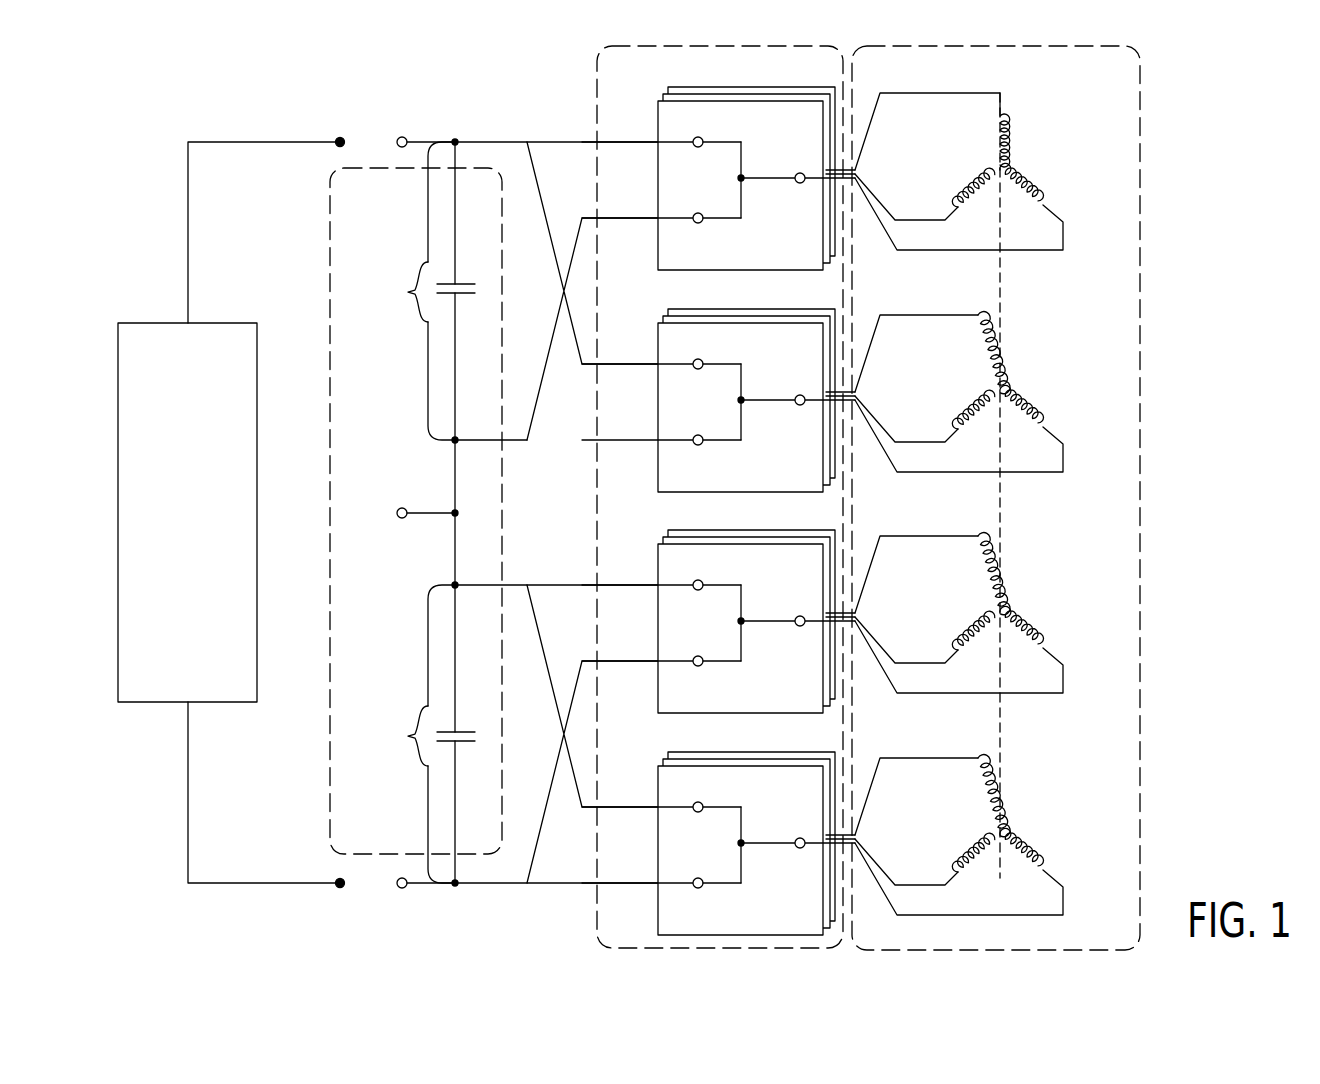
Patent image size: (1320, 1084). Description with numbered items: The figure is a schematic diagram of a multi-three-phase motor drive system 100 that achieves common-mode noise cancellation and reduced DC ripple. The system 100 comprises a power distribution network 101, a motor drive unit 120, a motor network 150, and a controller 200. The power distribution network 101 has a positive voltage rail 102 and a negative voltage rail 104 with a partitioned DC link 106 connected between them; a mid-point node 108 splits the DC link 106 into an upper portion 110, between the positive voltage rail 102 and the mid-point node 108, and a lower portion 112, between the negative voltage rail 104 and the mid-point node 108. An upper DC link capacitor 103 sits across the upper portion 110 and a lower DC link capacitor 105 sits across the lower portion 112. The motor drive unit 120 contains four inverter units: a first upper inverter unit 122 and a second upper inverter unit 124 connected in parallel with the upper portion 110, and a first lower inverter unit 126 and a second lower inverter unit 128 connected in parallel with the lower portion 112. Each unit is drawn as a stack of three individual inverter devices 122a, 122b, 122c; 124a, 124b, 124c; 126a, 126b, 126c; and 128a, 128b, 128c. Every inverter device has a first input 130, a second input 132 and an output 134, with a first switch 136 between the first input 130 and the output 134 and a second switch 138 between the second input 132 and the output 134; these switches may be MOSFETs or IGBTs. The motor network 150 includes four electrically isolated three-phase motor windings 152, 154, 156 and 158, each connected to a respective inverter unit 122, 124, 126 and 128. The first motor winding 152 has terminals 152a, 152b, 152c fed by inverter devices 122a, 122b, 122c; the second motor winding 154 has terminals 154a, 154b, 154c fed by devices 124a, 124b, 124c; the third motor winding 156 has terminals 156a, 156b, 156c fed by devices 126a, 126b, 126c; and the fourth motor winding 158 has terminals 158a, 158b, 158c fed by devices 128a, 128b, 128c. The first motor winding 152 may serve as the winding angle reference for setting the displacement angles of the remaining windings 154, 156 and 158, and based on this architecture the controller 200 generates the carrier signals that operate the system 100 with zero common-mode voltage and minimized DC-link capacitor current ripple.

The multi-three-phase motor drive system 100 is at (256, 127).
The power distribution network 101 is at (489, 134).
The positive voltage rail 102 is at (420, 140).
The upper DC link capacitor 103 is at (459, 282).
The negative voltage rail 104 is at (425, 888).
The lower DC link capacitor 105 is at (459, 730).
The partitioned direct current (DC) link 106 is at (425, 510).
The mid-point node 108 is at (318, 210).
The upper portion of the partitioned DC link 110 is at (378, 272).
The lower portion of the partitioned DC link 112 is at (378, 712).
The motor drive unit 120 is at (590, 88).
The first upper inverter unit 122 is at (652, 90).
The first inverter device of first upper inverter unit 122a is at (760, 100).
The second inverter device of first upper inverter unit 122b is at (705, 88).
The third inverter device of first upper inverter unit 122c is at (765, 93).
The second upper inverter unit 124 is at (650, 480).
The first inverter device of second upper inverter unit 124a is at (760, 322).
The second inverter device of second upper inverter unit 124b is at (705, 310).
The third inverter device of second upper inverter unit 124c is at (765, 315).
The first lower inverter unit 126 is at (650, 562).
The first inverter device of first lower inverter unit 126a is at (760, 543).
The second inverter device of first lower inverter unit 126b is at (705, 531).
The third inverter device of first lower inverter unit 126c is at (765, 536).
The second lower inverter unit 128 is at (650, 920).
The first inverter device of second lower inverter unit 128a is at (760, 765).
The second inverter device of second lower inverter unit 128b is at (705, 753).
The third inverter device of second lower inverter unit 128c is at (765, 758).
The first input 130 is at (730, 146).
The second input 132 is at (730, 214).
The output 134 is at (783, 184).
The first switch 136 is at (748, 167).
The second switch 138 is at (748, 191).
The motor network 150 is at (1150, 86).
The first motor winding 152 is at (1066, 122).
The first terminal of first motor winding 152a is at (963, 97).
The second terminal of first motor winding 152b is at (921, 218).
The third terminal of first motor winding 152c is at (1058, 214).
The second motor winding 154 is at (1066, 344).
The first terminal of second motor winding 154a is at (963, 319).
The second terminal of second motor winding 154b is at (921, 440).
The third terminal of second motor winding 154c is at (1058, 436).
The third motor winding 156 is at (1066, 565).
The first terminal of third motor winding 156a is at (963, 540).
The second terminal of third motor winding 156b is at (921, 661).
The third terminal of third motor winding 156c is at (1058, 657).
The fourth motor winding 158 is at (1066, 787).
The first terminal of fourth motor winding 158a is at (963, 762).
The second terminal of fourth motor winding 158b is at (921, 883).
The third terminal of fourth motor winding 158c is at (1058, 879).
The controller 200 is at (202, 521).